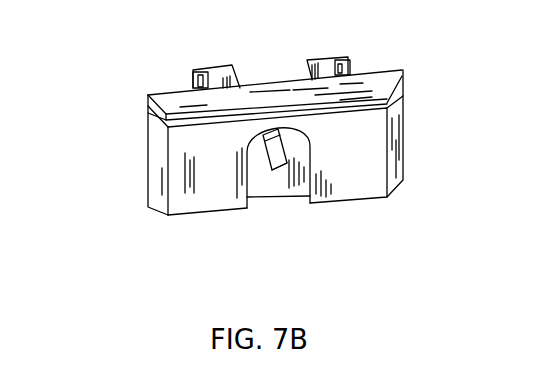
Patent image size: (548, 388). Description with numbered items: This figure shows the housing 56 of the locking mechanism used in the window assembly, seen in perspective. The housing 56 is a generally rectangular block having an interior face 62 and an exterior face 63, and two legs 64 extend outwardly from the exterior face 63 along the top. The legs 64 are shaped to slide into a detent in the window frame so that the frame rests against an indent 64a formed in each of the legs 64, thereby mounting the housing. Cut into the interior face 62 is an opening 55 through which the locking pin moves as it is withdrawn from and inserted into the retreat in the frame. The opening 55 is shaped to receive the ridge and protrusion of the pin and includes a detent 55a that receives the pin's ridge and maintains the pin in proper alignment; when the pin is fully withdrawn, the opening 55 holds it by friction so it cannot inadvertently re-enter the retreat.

The housing 56 is at (132, 250).
The interior face 62 is at (358, 190).
The exterior face 63 is at (272, 88).
The legs 64 is at (220, 68).
The indent 64a is at (192, 84).
The opening 55 is at (286, 138).
The detent 55a is at (270, 170).